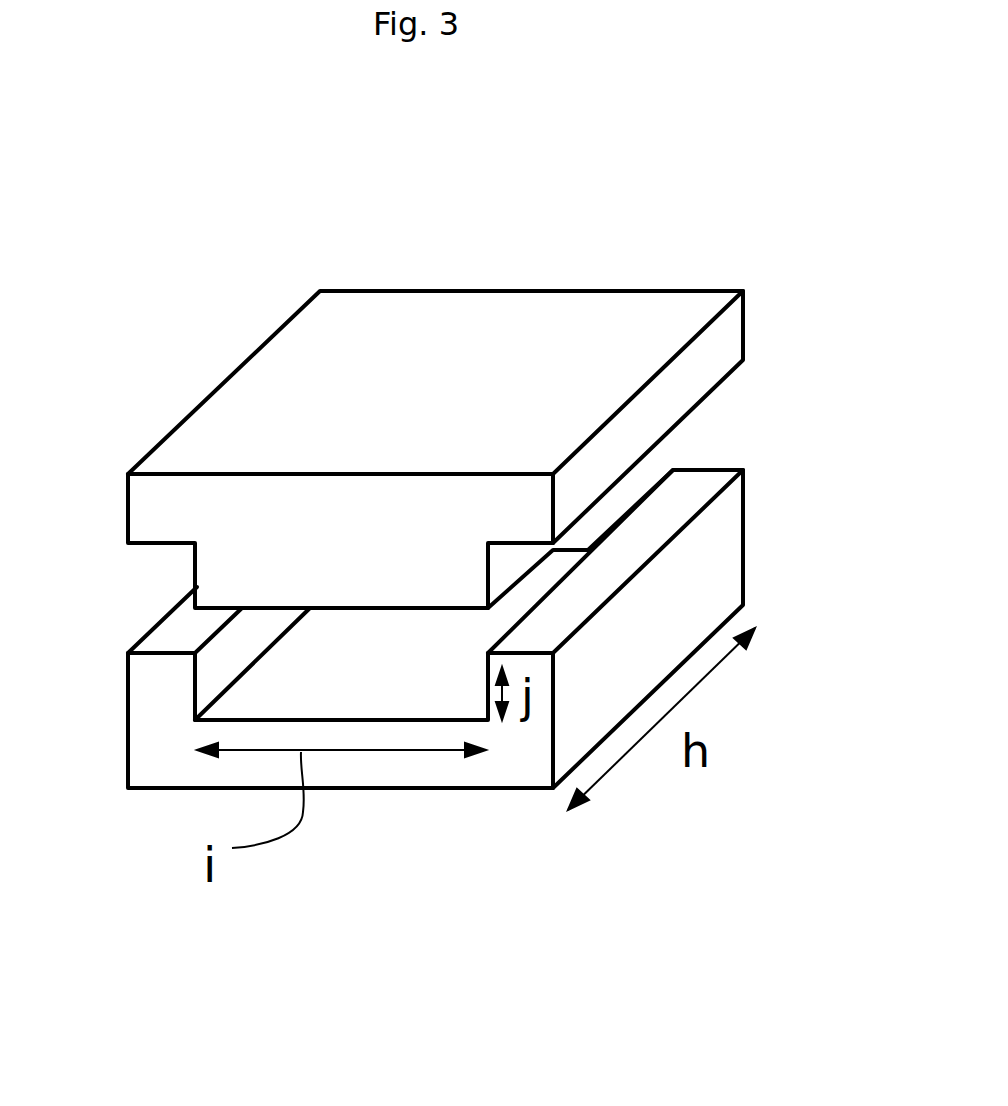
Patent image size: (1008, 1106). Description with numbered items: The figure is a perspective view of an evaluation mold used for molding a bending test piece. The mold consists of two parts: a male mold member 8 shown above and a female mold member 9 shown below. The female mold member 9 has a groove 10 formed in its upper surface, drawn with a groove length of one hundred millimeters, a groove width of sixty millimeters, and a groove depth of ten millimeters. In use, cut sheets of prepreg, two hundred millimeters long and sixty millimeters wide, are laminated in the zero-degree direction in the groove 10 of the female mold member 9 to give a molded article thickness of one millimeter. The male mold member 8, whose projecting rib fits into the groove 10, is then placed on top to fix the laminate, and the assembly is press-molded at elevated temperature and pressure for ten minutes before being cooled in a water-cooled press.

The male mold member 8 is at (728, 348).
The female mold member 9 is at (723, 578).
The groove 10 is at (263, 650).